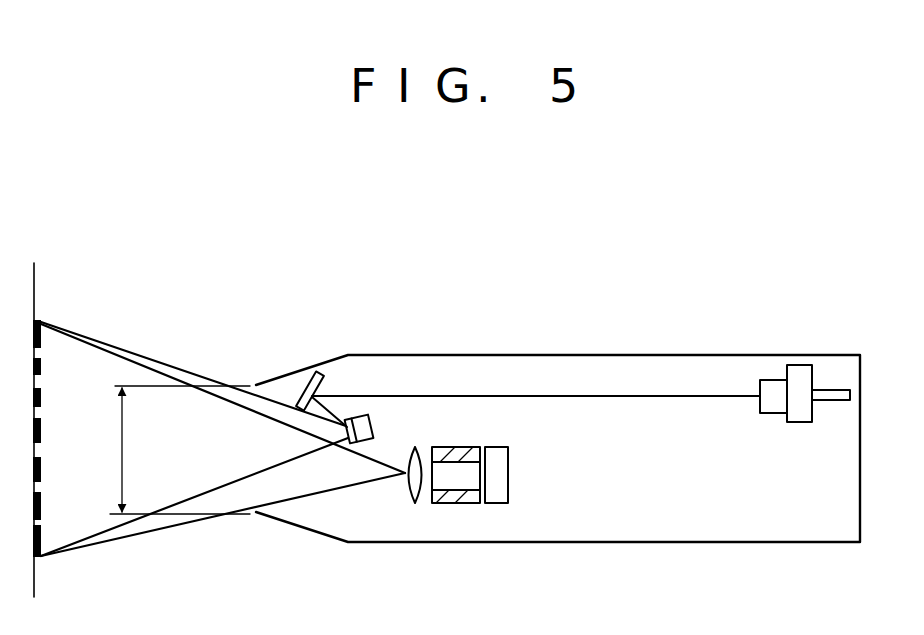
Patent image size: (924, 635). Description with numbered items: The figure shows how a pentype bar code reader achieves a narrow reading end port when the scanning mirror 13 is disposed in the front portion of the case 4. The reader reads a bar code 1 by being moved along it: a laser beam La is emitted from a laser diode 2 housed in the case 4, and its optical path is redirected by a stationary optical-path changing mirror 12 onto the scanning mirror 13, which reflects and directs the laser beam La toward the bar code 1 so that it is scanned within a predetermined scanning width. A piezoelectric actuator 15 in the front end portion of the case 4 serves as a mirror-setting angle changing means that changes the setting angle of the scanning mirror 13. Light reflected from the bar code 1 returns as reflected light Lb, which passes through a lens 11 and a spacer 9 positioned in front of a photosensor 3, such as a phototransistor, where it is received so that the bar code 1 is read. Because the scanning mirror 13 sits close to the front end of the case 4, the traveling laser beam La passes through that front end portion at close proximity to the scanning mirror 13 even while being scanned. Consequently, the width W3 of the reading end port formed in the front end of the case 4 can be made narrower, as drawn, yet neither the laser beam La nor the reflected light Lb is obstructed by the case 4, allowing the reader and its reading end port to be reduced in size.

The bar code 1 is at (50, 428).
The laser diode 2 is at (773, 378).
The photosensor 3 is at (497, 505).
The case 4 is at (573, 543).
The spacer 9 is at (462, 505).
The lens 11 is at (415, 505).
The optical-path changing mirror 12 is at (310, 376).
The scanning mirror 13 is at (362, 413).
The piezoelectric actuator 15 is at (372, 436).
The laser beam La is at (280, 412).
The reflected light Lb is at (332, 445).
The width of the reading end port W3 is at (180, 450).